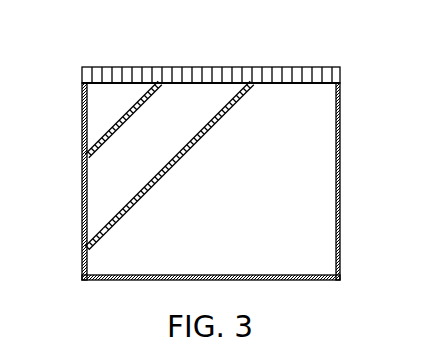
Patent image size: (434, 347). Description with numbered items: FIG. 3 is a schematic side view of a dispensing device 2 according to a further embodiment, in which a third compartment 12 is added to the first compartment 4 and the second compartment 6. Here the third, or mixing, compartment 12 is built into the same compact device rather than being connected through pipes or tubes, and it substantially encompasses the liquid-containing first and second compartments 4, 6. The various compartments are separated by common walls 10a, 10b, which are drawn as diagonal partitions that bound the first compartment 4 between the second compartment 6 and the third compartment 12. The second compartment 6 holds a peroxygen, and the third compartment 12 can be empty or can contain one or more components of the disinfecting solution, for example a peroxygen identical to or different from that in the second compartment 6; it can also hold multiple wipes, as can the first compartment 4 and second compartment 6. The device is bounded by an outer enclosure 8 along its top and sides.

The electrochemical device / housing assembly 2 is at (98, 57).
The first compartment 4 is at (157, 155).
The second compartment 6 is at (115, 113).
The partition wall / membrane 8 is at (262, 80).
The common wall 10a is at (97, 156).
The common wall 10b is at (104, 241).
The third compartment 12 is at (255, 206).